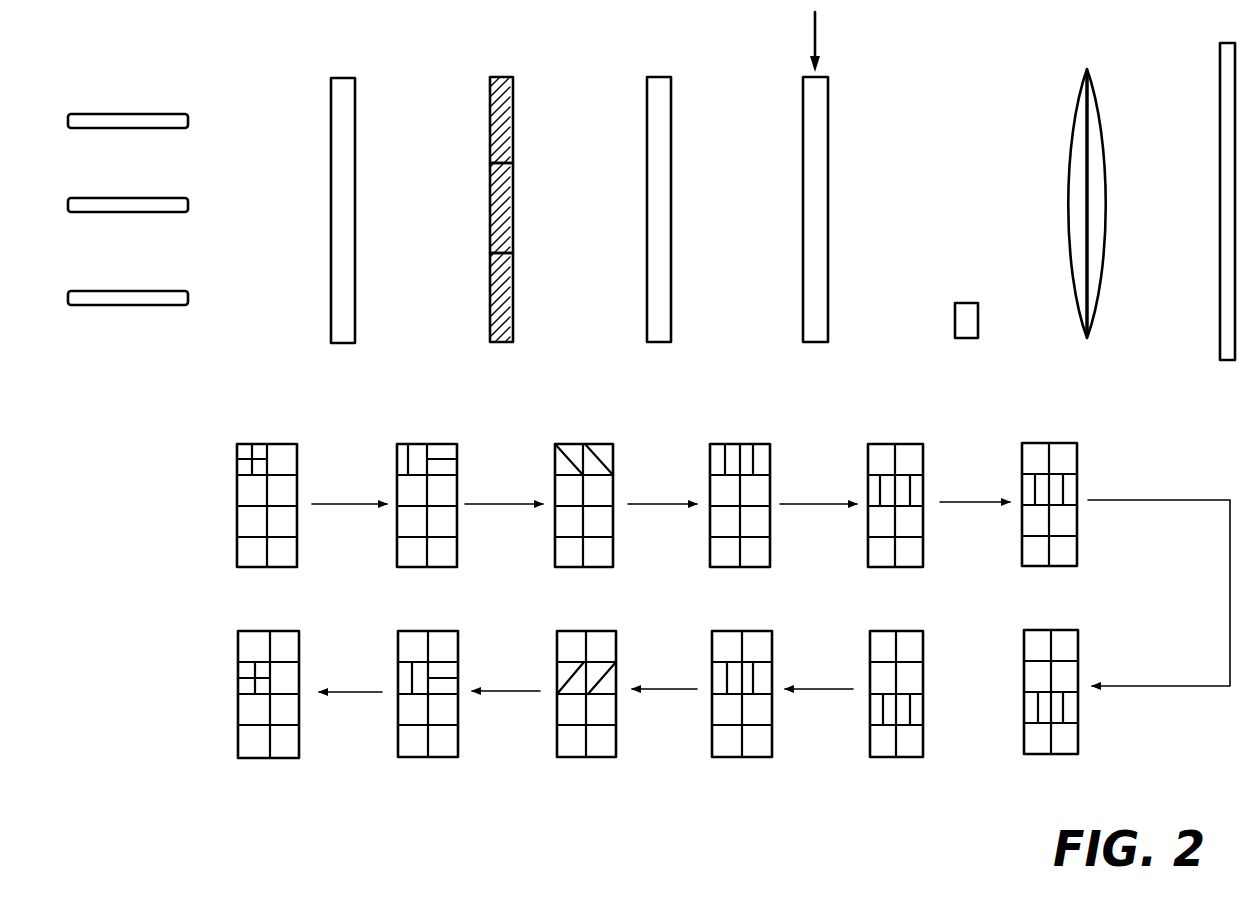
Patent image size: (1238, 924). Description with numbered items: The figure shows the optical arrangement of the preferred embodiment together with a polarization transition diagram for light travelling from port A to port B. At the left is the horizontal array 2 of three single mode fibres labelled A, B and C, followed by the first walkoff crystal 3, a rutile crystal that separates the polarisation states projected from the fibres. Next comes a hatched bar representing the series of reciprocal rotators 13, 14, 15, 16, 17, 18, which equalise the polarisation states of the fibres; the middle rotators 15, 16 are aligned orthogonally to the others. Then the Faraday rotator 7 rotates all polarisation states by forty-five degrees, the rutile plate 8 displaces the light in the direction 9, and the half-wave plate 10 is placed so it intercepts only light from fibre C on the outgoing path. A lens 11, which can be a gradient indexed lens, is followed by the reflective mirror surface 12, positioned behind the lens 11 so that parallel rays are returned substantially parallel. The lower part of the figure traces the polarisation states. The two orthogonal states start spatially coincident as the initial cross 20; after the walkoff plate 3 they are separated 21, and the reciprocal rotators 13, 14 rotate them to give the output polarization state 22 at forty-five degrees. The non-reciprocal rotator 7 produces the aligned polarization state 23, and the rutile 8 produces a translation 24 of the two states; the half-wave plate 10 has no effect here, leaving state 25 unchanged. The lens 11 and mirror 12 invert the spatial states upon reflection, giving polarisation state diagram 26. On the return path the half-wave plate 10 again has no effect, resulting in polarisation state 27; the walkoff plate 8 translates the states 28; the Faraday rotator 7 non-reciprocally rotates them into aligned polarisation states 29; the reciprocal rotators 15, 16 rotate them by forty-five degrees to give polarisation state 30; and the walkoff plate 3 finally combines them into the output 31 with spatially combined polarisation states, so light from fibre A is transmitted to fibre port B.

The horizontal array of single mode fibres 2 is at (158, 110).
The first walkoff crystal 3 is at (340, 316).
The Faraday rotator 7 is at (657, 310).
The rutile plate 8 is at (810, 313).
The direction 9 is at (824, 42).
The half-wave plate 10 is at (963, 320).
The lens 11 is at (1090, 330).
The reflective mirror surface 12 is at (1228, 78).
The reciprocal rotator 13 is at (546, 217).
The reciprocal rotator 14 is at (513, 113).
The middle reciprocal rotator 15 is at (558, 200).
The middle reciprocal rotator 16 is at (513, 187).
The reciprocal rotator 17 is at (558, 294).
The reciprocal rotator 18 is at (513, 284).
The initial cross 20 is at (237, 490).
The separated polarisation states 21 is at (457, 480).
The output polarization state 22 is at (613, 485).
The aligned polarization state 23 is at (770, 488).
The translation 24 is at (923, 485).
The state diagram 25 is at (1077, 470).
The polarisation state diagram 26 is at (1078, 725).
The polarisation state 27 is at (923, 742).
The translated polarisation states 28 is at (772, 757).
The aligned polarisation states 29 is at (616, 737).
The polarisation state 30 is at (458, 735).
The output 31 is at (278, 759).